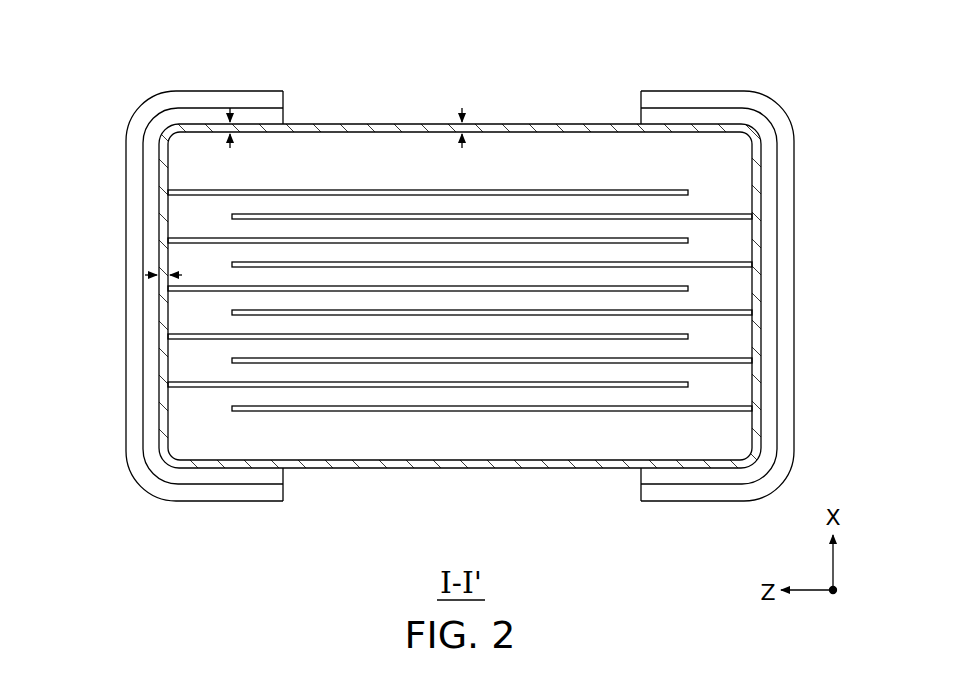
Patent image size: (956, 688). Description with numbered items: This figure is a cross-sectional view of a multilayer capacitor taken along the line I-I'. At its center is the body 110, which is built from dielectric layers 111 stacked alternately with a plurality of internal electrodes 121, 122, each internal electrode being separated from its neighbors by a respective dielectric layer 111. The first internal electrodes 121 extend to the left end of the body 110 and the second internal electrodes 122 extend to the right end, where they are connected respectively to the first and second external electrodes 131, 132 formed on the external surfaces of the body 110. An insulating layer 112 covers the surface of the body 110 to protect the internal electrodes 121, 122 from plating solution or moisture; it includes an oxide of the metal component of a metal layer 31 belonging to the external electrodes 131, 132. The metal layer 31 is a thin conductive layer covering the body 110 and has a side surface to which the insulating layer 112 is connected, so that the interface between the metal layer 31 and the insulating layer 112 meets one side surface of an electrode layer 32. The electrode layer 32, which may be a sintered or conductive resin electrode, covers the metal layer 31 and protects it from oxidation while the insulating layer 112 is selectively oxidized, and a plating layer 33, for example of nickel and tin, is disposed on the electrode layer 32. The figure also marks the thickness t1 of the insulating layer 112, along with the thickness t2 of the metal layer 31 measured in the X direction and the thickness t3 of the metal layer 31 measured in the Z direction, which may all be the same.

The body 110 is at (460, 297).
The dielectric layer 111 is at (507, 207).
The insulating layer 112 is at (331, 123).
The first internal electrode 121 is at (553, 192).
The second internal electrode 122 is at (617, 215).
The first external electrode 131 is at (167, 253).
The second external electrode 132 is at (760, 76).
The metal layer 31 is at (165, 291).
The electrode layer 32 is at (150, 330).
The plating layer 33 is at (133, 380).
The thickness of insulating layer t1 is at (447, 105).
The thickness of metal layer in first direction t2 is at (231, 104).
The thickness of metal layer in third direction t3 is at (163, 265).